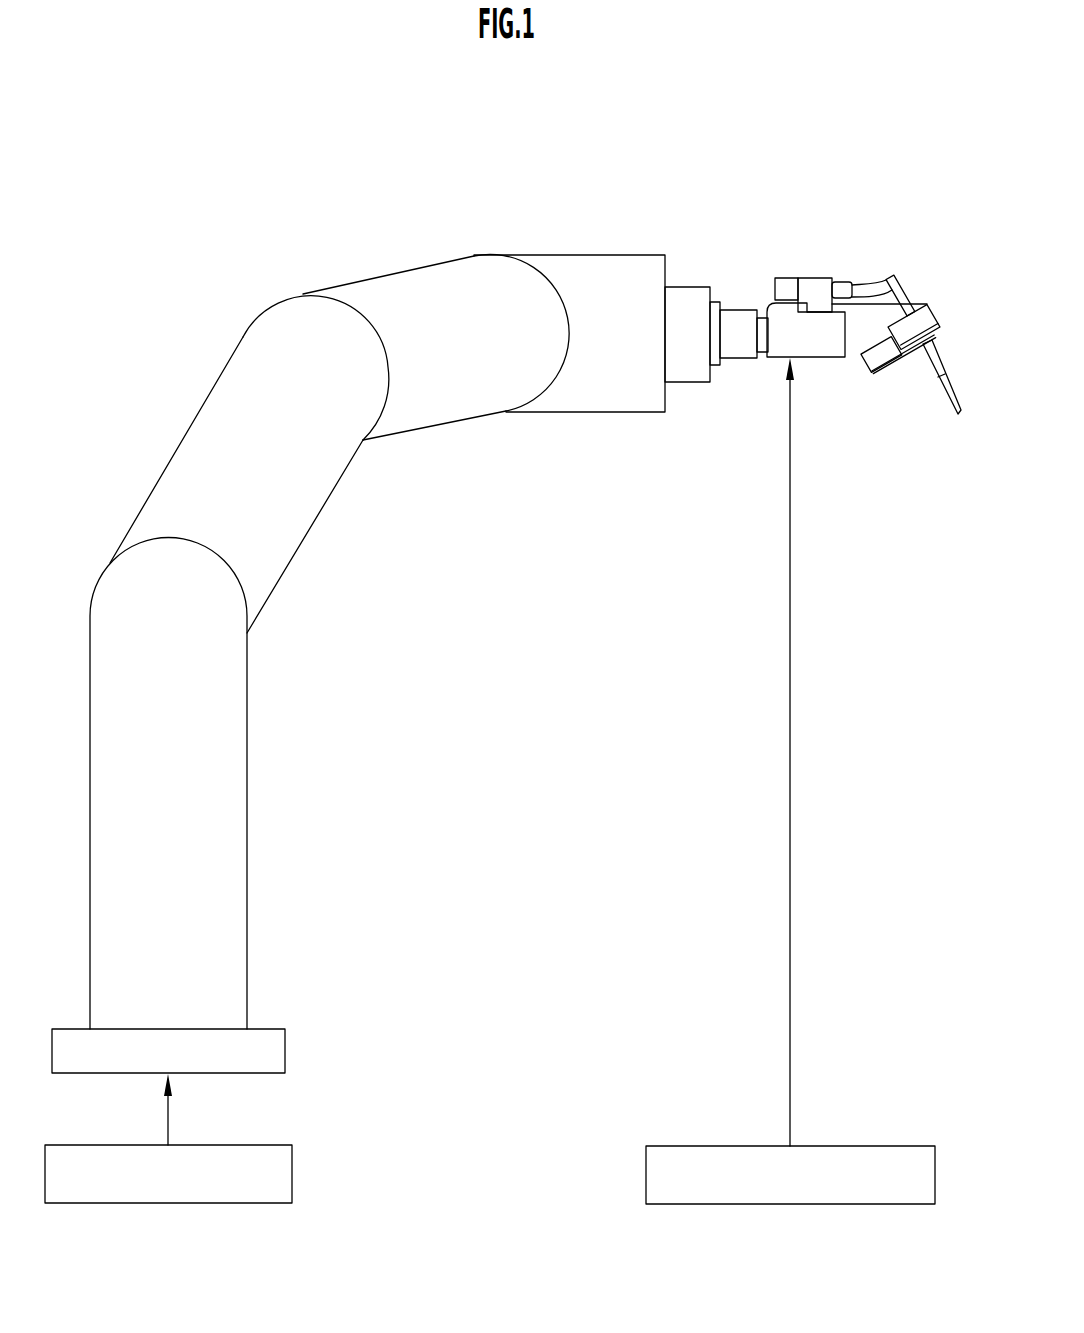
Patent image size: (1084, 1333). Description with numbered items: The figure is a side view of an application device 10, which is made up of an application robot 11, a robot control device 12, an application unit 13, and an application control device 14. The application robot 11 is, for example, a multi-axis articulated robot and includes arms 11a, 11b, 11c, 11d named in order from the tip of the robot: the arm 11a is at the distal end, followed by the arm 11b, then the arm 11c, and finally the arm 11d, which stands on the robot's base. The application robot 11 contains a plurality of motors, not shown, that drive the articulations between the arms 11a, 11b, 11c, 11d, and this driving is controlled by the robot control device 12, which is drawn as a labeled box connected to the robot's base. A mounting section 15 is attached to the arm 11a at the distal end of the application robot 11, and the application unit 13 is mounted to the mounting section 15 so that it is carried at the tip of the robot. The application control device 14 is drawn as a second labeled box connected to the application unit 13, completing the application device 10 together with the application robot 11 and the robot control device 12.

The application device 10 is at (752, 151).
The application robot 11 is at (264, 270).
The arm 11a is at (605, 297).
The arm 11b is at (405, 307).
The arm 11c is at (205, 443).
The arm 11d is at (225, 830).
The robot control device 12 is at (292, 1172).
The application unit 13 is at (845, 250).
The application control device 14 is at (910, 1206).
The mounting section 15 is at (685, 303).